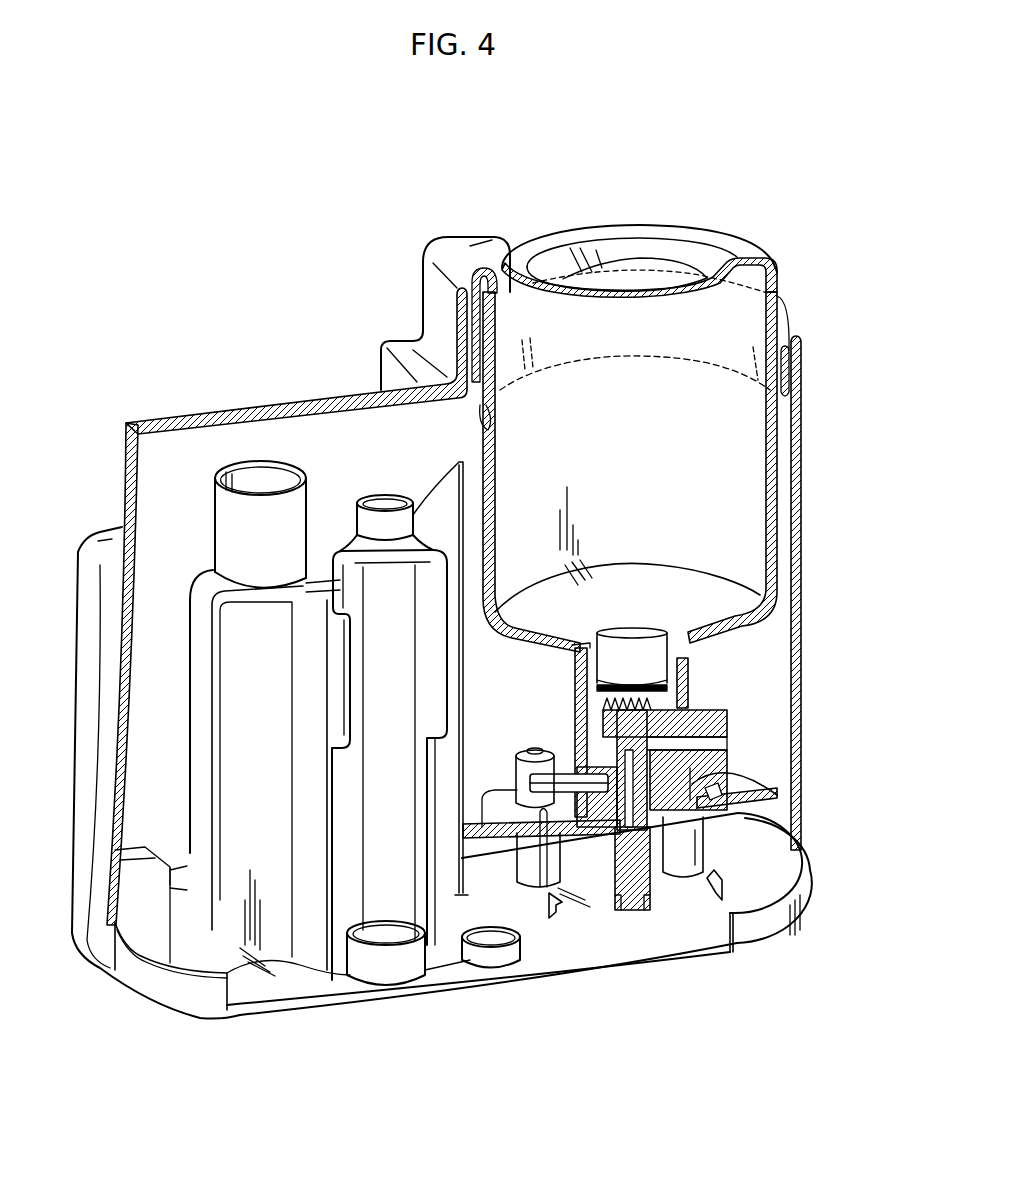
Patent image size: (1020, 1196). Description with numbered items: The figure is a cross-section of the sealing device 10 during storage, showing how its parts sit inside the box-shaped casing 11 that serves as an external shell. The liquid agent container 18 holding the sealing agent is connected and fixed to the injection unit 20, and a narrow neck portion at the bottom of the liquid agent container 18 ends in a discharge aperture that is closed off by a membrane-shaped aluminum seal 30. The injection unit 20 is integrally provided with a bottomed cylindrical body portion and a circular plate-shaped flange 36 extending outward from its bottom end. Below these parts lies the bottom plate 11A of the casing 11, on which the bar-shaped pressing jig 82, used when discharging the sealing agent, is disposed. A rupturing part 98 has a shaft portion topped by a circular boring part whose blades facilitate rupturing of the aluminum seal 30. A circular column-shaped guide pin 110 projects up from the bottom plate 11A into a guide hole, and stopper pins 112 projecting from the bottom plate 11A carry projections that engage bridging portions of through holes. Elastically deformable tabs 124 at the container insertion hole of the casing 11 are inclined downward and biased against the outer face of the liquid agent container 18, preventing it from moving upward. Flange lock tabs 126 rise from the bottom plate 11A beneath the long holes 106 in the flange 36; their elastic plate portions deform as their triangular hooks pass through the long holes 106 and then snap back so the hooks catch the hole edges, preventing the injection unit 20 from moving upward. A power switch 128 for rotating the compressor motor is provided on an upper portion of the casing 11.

The sealing device 10 is at (275, 258).
The casing 11 is at (440, 238).
The bottom plate 11A is at (647, 937).
The liquid agent container 18 is at (699, 230).
The injection unit 20 is at (567, 697).
The aluminum seal 30 is at (630, 680).
The flange 36 is at (745, 785).
The pressing jig 82 is at (612, 900).
The rupturing part 98 is at (690, 695).
The long holes 106 is at (553, 897).
The guide pin 110 is at (532, 750).
The stopper pins 112 is at (690, 855).
The tabs 124 is at (553, 335).
The flange lock tabs 126 is at (700, 895).
The power switch 128 is at (553, 920).